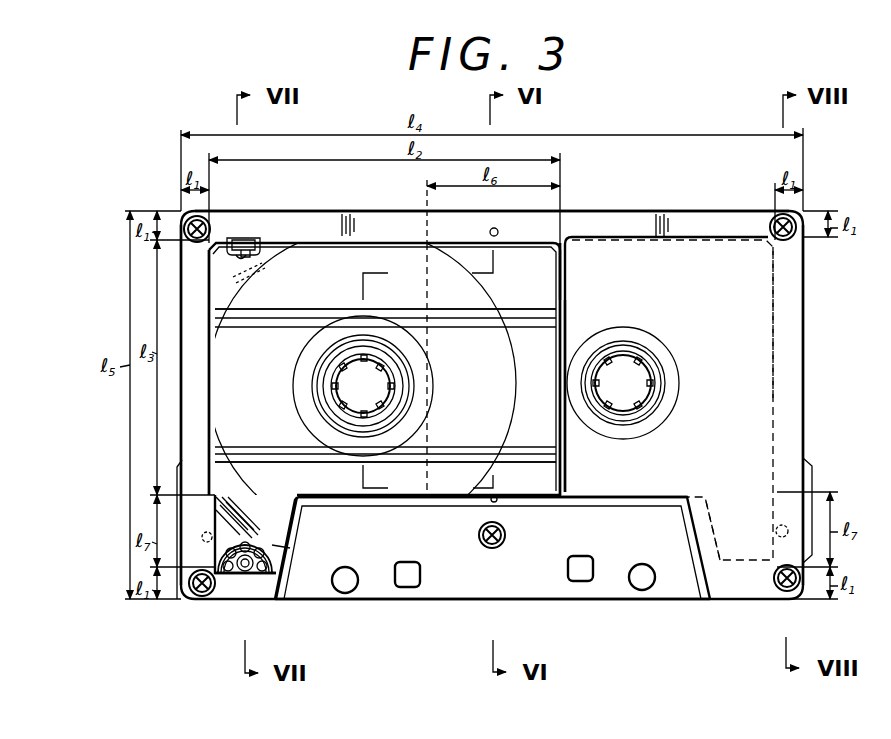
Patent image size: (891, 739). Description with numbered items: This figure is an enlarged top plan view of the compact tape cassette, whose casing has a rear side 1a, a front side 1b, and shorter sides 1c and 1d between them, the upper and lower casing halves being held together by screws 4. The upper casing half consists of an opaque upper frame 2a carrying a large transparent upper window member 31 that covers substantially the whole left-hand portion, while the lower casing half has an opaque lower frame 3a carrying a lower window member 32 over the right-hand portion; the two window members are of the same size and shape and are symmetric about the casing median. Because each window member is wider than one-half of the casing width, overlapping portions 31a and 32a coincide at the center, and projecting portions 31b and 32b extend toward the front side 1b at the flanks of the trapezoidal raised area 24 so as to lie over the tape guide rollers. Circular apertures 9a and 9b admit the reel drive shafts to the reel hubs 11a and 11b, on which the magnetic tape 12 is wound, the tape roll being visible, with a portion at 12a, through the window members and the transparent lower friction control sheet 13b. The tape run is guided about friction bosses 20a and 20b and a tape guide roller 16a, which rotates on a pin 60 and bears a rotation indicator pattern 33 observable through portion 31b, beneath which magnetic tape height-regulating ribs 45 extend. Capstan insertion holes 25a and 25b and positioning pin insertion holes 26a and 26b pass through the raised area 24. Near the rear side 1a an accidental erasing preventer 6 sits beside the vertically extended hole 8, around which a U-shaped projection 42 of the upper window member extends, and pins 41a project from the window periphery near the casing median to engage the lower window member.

The rear side 1a is at (333, 212).
The front side 1b is at (383, 606).
The side 1c is at (181, 437).
The side 1d is at (803, 420).
The upper frame 2a is at (586, 212).
The lower frame 3a is at (642, 213).
The screws 4 is at (207, 222).
The accidental erasing preventer 6 is at (242, 238).
The vertically extended hole 8 is at (241, 259).
The circular aperture 9a is at (338, 404).
The circular aperture 9b is at (652, 369).
The reel hub 11a is at (332, 387).
The reel hub 11b is at (641, 354).
The magnetic tape 12 is at (481, 297).
The tape roll portion 12a is at (488, 362).
The lower friction control sheet 13b is at (324, 314).
The tape guide roller 16a is at (240, 576).
The friction boss 20a is at (202, 537).
The friction boss 20b is at (778, 529).
The raised area 24 is at (523, 590).
The capstan insertion hole 25a is at (344, 592).
The capstan insertion hole 25b is at (642, 590).
The positioning pin insertion hole 26a is at (406, 587).
The positioning pin insertion hole 26b is at (578, 581).
The upper window member 31 is at (272, 242).
The overlapping portion 31a is at (552, 263).
The projecting portion 31b is at (300, 535).
The lower window member 32 is at (765, 288).
The overlapping portion 32a is at (551, 331).
The projecting portion 32b is at (706, 528).
The rotation indicator pattern 33 is at (270, 552).
The pins 41a is at (498, 236).
The U-shaped projection 42 is at (254, 257).
The magnetic tape height-regulating ribs 45 is at (250, 522).
The pin 60 is at (245, 573).